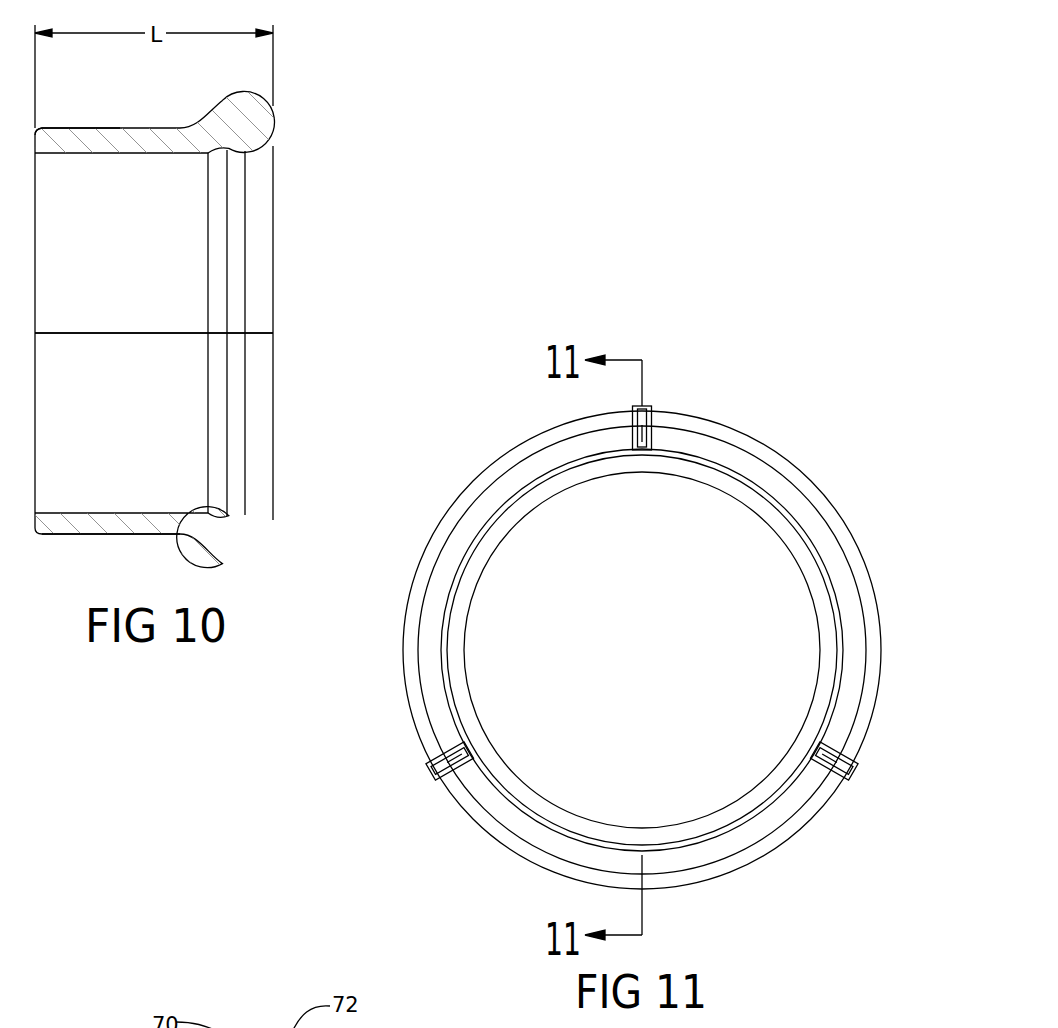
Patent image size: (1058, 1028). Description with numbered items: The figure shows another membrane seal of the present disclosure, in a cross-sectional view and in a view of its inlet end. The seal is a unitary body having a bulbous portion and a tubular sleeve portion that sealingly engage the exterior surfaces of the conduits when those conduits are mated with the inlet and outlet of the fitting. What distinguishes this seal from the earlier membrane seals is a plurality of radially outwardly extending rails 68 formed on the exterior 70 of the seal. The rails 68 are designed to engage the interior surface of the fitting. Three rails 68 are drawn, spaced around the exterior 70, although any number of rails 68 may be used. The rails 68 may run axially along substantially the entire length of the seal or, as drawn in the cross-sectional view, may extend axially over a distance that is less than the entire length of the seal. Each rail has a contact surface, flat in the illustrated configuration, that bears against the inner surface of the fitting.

In FIG. 10, the rails 68 is at (45, 128).
In FIG. 11, the rails 68 is at (648, 405).
In FIG. 10, the exterior 70 is at (110, 534).
In FIG. 11, the exterior 70 is at (533, 435).